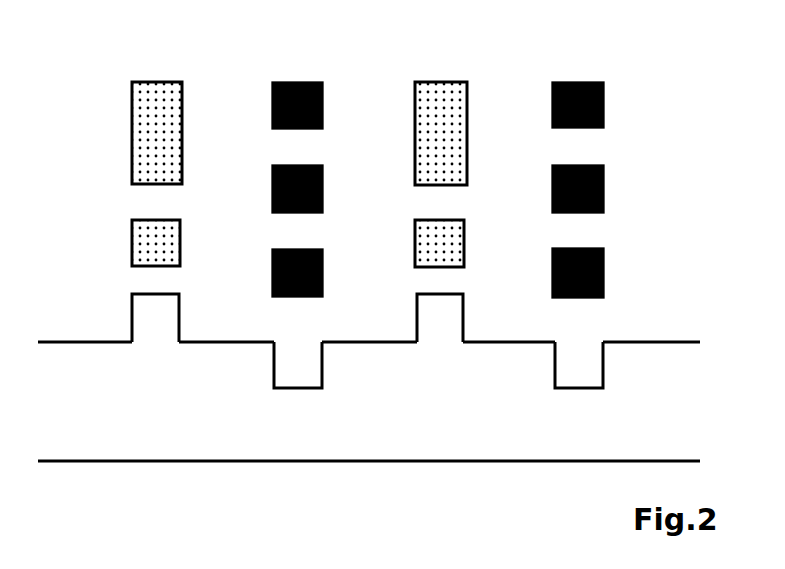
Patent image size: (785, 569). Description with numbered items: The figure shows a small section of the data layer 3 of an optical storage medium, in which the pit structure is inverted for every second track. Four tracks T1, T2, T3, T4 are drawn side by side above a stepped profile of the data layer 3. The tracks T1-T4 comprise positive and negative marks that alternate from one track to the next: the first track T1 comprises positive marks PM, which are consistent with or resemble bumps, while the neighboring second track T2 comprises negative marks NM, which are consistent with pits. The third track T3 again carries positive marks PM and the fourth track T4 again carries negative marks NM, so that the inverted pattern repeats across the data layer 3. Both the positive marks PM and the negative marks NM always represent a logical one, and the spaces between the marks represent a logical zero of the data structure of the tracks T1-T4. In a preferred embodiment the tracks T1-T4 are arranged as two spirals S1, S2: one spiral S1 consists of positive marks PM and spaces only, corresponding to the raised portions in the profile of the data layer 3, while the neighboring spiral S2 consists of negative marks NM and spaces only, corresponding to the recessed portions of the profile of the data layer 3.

The data layer 3 is at (663, 405).
The first spiral S1 is at (152, 338).
The second spiral S2 is at (280, 367).
The first track T1 is at (158, 85).
The second track T2 is at (302, 80).
The third track T3 is at (438, 82).
The fourth track T4 is at (575, 82).
The positive marks PM is at (113, 163).
The negative marks NM is at (643, 157).